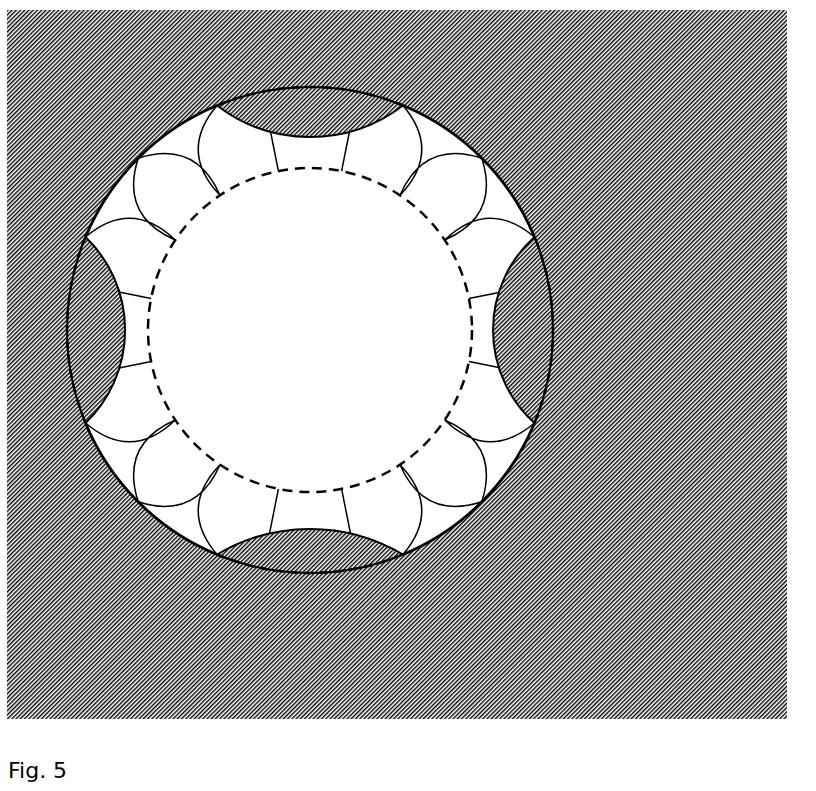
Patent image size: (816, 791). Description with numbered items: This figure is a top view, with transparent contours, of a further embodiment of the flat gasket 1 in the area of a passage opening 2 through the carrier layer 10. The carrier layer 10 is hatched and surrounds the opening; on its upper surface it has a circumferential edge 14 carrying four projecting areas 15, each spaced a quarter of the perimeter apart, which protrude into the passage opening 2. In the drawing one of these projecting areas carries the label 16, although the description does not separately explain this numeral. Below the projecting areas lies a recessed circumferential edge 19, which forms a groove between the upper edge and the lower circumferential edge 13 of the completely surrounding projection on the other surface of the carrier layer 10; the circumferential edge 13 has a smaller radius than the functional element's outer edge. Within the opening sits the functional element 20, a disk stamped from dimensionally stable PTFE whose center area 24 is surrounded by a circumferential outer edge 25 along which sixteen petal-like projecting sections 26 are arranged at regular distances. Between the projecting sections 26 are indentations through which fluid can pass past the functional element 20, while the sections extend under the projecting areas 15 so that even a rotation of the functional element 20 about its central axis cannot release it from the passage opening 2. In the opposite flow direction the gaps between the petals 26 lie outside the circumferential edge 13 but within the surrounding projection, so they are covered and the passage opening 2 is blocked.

The flat gasket 1 is at (631, 294).
The passage opening 2 is at (388, 410).
The carrier layer 10 is at (626, 225).
The circumferential edge 13 is at (242, 175).
The circumferential edge 14 is at (519, 166).
The projecting areas 15 is at (117, 330).
The groove 16 is at (279, 130).
The circumferential edge 19 is at (443, 118).
The functional element 20 is at (310, 338).
The center area 24 is at (299, 411).
The circumferential outer edge 25 is at (340, 89).
The projecting sections 26 is at (153, 185).